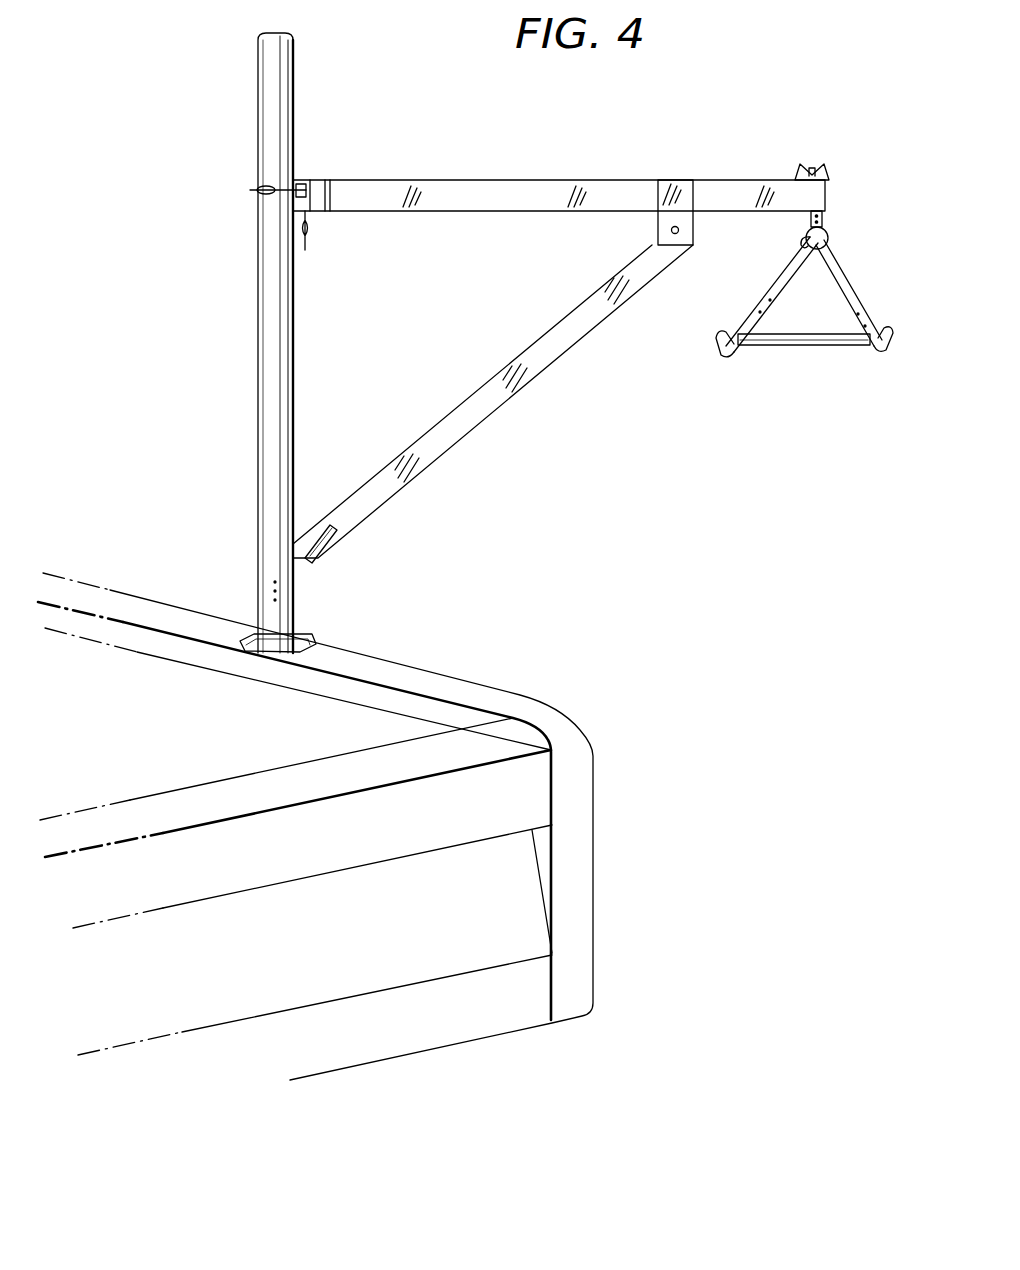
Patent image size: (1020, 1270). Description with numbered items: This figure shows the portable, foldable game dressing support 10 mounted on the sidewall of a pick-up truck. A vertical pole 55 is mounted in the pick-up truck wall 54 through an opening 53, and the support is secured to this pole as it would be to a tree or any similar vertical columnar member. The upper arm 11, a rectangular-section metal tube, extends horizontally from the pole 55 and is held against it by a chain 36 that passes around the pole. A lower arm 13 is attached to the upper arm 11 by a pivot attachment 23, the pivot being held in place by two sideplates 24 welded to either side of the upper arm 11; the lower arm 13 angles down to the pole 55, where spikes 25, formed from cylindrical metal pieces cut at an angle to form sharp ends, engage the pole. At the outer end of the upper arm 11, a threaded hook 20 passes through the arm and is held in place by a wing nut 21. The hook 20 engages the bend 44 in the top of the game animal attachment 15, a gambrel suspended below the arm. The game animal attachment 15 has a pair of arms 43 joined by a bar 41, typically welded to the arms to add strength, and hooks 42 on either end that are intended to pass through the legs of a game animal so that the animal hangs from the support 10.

The game dressing support 10 is at (583, 147).
The upper arm 11 is at (443, 182).
The lower arm 13 is at (496, 460).
The game animal attachment 15 is at (758, 266).
The hook 20 is at (827, 217).
The wing nut 21 is at (838, 166).
The pivot attachment 23 is at (663, 233).
The sideplates 24 is at (680, 181).
The spikes 25 is at (307, 562).
The chain 36 is at (252, 190).
The bar 41 is at (780, 350).
The hooks 42 is at (720, 333).
The arms 43 is at (837, 297).
The bend 44 is at (830, 246).
The opening 53 is at (313, 640).
The pick-up truck wall 54 is at (502, 694).
The pole 55 is at (268, 318).